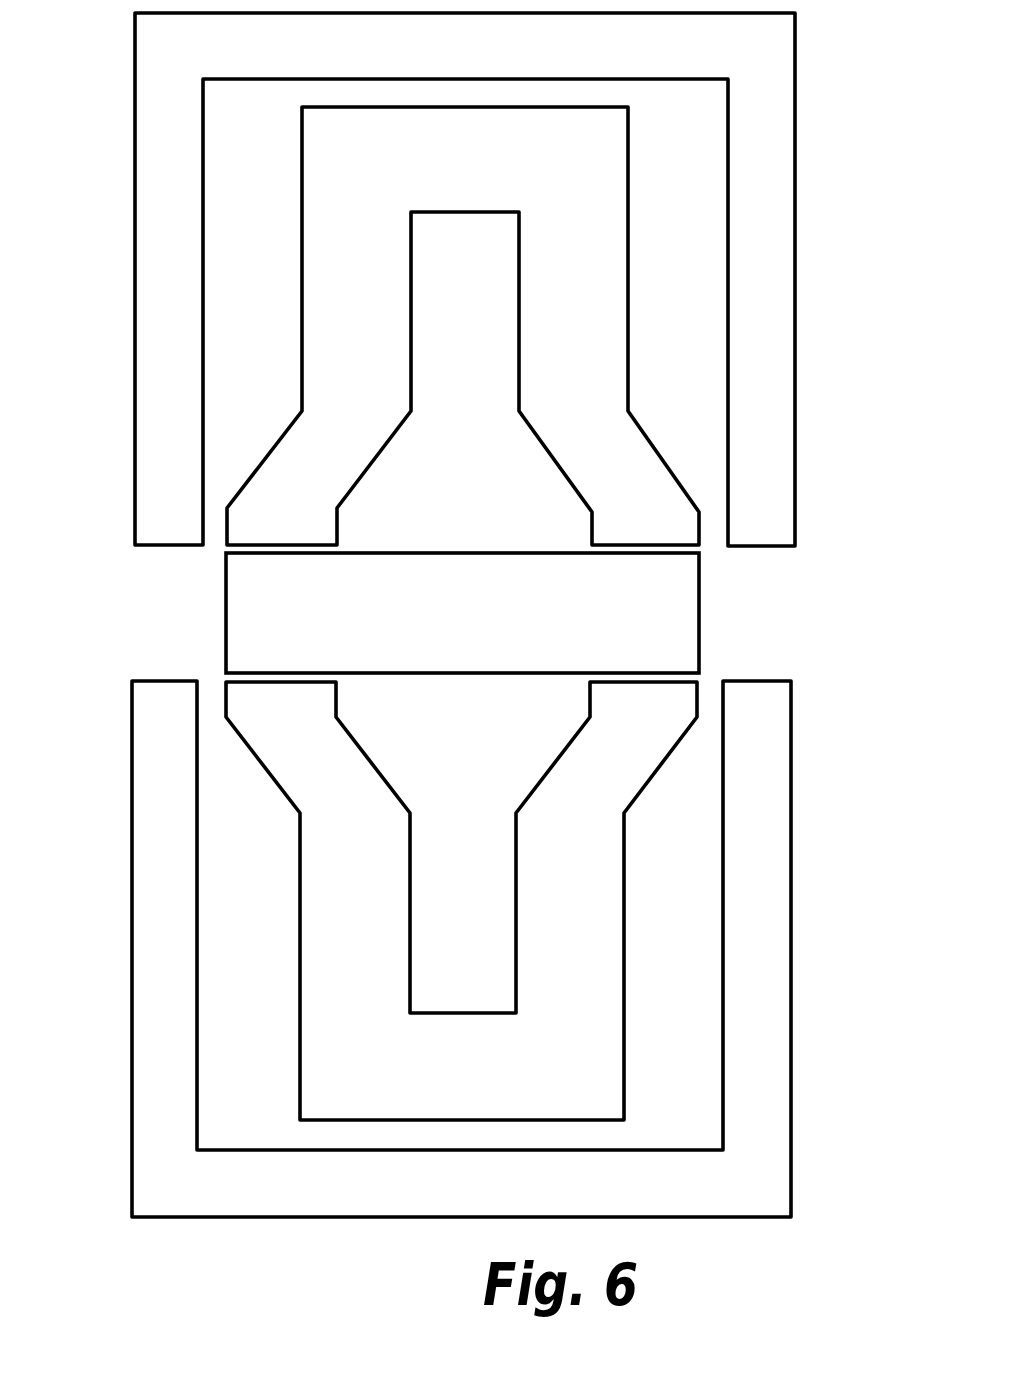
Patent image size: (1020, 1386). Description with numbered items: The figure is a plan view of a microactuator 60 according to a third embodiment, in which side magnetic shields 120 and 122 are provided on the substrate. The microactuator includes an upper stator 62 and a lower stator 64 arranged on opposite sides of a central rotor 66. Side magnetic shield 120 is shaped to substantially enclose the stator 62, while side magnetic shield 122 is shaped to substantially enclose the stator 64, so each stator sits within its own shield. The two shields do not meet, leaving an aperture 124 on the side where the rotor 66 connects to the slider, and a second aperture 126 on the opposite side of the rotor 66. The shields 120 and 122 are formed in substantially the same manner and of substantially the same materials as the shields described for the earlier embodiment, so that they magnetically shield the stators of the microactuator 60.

The microactuator 60 is at (278, 897).
The stator 62 is at (627, 275).
The stator 64 is at (624, 884).
The rotor 66 is at (428, 552).
The side magnetic shield 120 is at (800, 281).
The side magnetic shield 122 is at (796, 936).
The aperture 124 is at (796, 620).
The aperture 126 is at (160, 617).